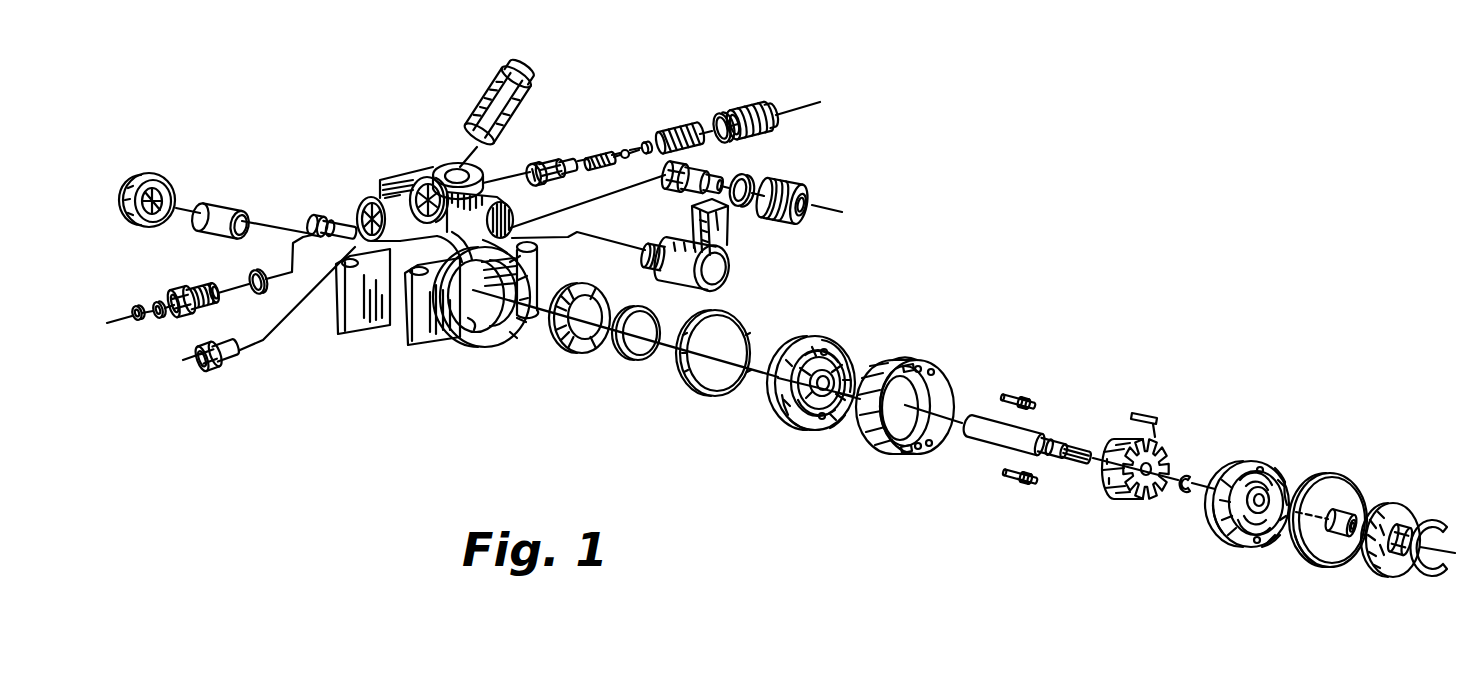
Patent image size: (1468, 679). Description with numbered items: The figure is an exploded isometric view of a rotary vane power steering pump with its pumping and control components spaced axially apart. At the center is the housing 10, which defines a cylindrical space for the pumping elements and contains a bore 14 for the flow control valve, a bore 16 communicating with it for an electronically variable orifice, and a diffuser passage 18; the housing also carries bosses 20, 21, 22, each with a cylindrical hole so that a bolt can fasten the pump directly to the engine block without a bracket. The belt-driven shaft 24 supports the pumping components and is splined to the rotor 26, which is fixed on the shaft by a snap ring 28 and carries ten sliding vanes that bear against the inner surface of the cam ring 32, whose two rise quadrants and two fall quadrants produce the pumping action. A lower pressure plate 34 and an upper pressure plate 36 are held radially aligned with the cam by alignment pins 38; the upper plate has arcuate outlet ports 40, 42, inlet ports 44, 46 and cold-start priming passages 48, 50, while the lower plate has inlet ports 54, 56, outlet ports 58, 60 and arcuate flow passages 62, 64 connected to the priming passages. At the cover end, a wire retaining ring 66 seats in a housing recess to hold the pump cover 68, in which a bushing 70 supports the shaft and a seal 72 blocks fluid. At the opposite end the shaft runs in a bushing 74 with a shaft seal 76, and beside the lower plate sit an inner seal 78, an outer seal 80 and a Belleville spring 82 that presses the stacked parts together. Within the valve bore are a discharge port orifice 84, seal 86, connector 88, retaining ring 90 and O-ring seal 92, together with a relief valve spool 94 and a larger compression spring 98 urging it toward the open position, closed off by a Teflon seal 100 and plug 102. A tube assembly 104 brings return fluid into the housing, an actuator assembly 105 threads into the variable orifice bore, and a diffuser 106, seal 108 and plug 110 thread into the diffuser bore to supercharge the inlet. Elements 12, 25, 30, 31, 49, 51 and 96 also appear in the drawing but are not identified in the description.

The housing 10 is at (385, 327).
The cylindrical bore boss 12 is at (463, 340).
The bore 14 is at (353, 210).
The bore 16 is at (418, 180).
The diffuser passage 18 is at (523, 215).
The boss 20 is at (343, 333).
The boss 21 is at (413, 347).
The boss 22 is at (575, 238).
The shaft 24 is at (1045, 425).
The splined shaft end 25 is at (1040, 440).
The rotor 26 is at (1157, 450).
The snap ring 28 is at (1192, 480).
The key 30 is at (1150, 407).
The bore of cam ring 31 is at (903, 407).
The cam ring 32 is at (997, 340).
The lower pressure plate 34 is at (837, 340).
The upper pressure plate 36 is at (1295, 470).
The alignment pins 38 is at (1063, 387).
The arcuate outlet port 40 is at (1283, 477).
The arcuate outlet port 42 is at (1217, 520).
The inlet port 44 is at (1292, 477).
The inlet port 46 is at (1273, 537).
The arcuate passage 48 is at (1313, 480).
The shaft bore 49 is at (1255, 465).
The arcuate passage 50 is at (1217, 520).
The diaphragm seat 51 is at (1307, 543).
The inlet port 54 is at (823, 313).
The inlet port 56 is at (837, 413).
The outlet port 58 is at (850, 367).
The outlet port 60 is at (800, 427).
The arcuate flow passage 62 is at (947, 333).
The arcuate flow passage 64 is at (783, 407).
The wire retaining ring 66 is at (1437, 520).
The pump cover 68 is at (1420, 487).
The bushing 70 is at (1367, 547).
The seal 72 is at (1355, 483).
The bushing 74 is at (266, 172).
The shaft seal 76 is at (196, 140).
The inner seal 78 is at (730, 320).
The outer seal 80 is at (655, 317).
The Belleville spring 82 is at (605, 297).
The discharge port orifice 84 is at (330, 217).
The seal 86 is at (257, 293).
The connector 88 is at (200, 257).
The retaining ring 90 is at (160, 317).
The O-ring seal 92 is at (143, 270).
The relief valve spool 94 is at (565, 157).
The valve ball and spring 96 is at (657, 130).
The larger compression spring 98 is at (707, 87).
The Teflon seal 100 is at (727, 113).
The plug 102 is at (775, 100).
The tube assembly 104 is at (487, 33).
The actuator assembly 105 is at (735, 270).
The diffuser 106 is at (717, 167).
The seal 108 is at (757, 173).
The plug 110 is at (810, 193).